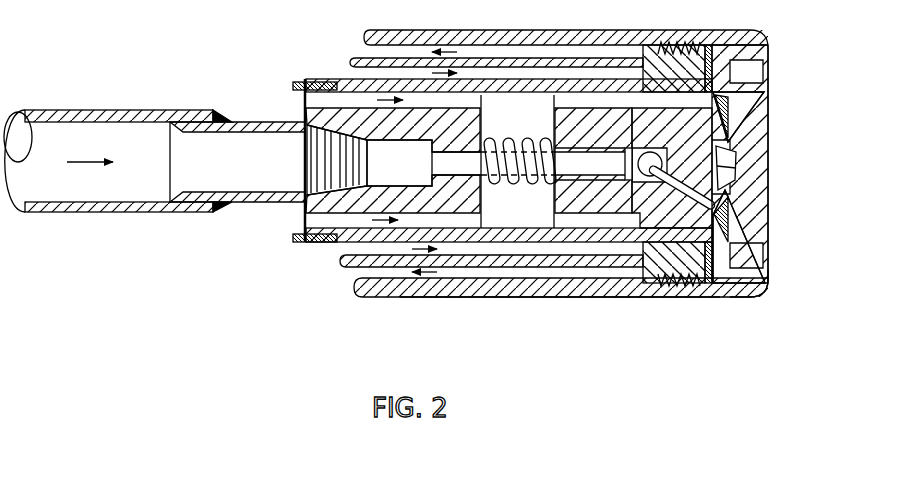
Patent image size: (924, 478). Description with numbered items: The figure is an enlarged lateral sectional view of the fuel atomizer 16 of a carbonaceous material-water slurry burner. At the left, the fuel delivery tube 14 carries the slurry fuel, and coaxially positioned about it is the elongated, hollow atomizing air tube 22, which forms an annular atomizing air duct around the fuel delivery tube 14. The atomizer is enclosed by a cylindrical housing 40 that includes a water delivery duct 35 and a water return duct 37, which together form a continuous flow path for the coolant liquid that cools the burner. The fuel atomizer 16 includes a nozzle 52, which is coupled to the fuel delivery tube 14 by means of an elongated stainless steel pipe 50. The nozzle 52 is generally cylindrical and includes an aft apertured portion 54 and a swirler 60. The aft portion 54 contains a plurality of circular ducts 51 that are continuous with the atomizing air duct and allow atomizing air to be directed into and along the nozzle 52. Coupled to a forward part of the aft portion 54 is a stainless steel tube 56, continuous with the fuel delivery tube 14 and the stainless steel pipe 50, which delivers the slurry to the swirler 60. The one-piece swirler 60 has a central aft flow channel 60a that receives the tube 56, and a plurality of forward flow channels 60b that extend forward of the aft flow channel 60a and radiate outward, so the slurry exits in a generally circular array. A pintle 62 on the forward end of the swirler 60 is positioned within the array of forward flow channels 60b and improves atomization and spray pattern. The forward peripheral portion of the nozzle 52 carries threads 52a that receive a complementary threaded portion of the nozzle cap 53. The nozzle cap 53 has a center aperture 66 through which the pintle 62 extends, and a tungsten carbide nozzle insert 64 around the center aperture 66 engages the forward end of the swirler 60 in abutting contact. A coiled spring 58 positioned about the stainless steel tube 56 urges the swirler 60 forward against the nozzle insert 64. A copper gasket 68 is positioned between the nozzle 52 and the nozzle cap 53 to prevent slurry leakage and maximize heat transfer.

The fuel delivery tube 14 is at (72, 110).
The fuel atomizer 16 is at (800, 270).
The atomizing air tube 22 is at (310, 84).
The water delivery duct 35 is at (348, 247).
The water return duct 37 is at (357, 275).
The cylindrical housing 40 is at (440, 296).
The stainless steel pipe 50 is at (266, 121).
The circular ducts 51 is at (466, 219).
The nozzle 52 is at (658, 46).
The threads 52a is at (668, 45).
The nozzle cap 53 is at (743, 298).
The aft apertured portion 54 is at (460, 127).
The stainless steel tube 56 is at (526, 185).
The coiled spring 58 is at (520, 140).
The swirler 60 is at (738, 151).
The aft flow channel 60a is at (587, 176).
The forward flow channels 60b is at (651, 181).
The pintle 62 is at (729, 176).
The nozzle insert 64 is at (735, 103).
The center aperture 66 is at (726, 186).
The copper gasket 68 is at (726, 40).